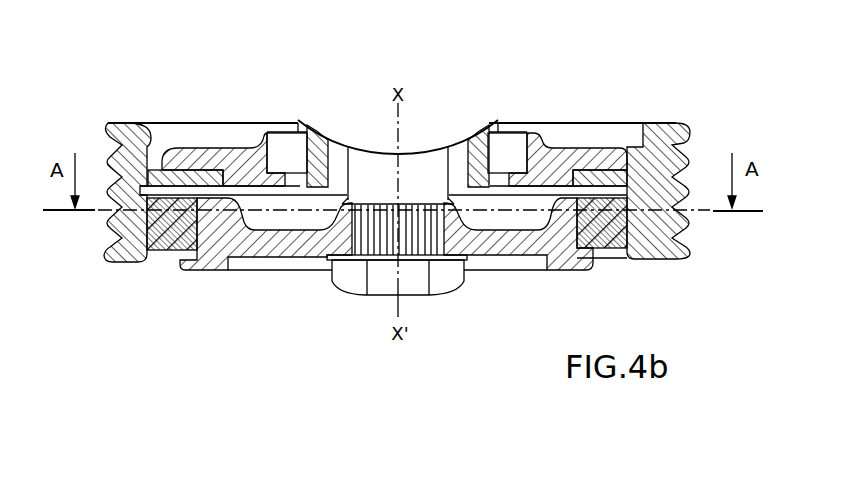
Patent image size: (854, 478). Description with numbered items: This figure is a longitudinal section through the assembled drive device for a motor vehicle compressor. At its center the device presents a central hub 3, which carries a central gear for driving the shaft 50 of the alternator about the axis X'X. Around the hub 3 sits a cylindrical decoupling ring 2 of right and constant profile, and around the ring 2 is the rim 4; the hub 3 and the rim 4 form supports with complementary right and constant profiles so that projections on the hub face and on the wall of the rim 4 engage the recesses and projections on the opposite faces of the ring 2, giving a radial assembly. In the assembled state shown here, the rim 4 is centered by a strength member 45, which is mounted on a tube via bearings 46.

The decoupling ring 2 is at (155, 250).
The central hub 3 is at (205, 272).
The rim 4 is at (132, 130).
The strength member 45 is at (207, 148).
The bearings 46 is at (283, 133).
The shaft 50 is at (422, 170).